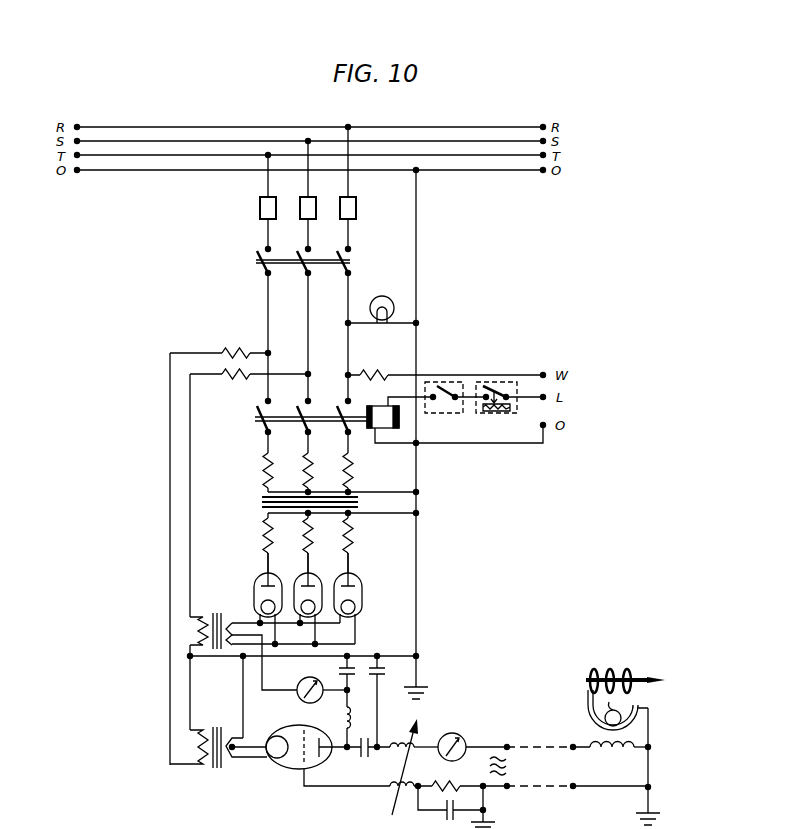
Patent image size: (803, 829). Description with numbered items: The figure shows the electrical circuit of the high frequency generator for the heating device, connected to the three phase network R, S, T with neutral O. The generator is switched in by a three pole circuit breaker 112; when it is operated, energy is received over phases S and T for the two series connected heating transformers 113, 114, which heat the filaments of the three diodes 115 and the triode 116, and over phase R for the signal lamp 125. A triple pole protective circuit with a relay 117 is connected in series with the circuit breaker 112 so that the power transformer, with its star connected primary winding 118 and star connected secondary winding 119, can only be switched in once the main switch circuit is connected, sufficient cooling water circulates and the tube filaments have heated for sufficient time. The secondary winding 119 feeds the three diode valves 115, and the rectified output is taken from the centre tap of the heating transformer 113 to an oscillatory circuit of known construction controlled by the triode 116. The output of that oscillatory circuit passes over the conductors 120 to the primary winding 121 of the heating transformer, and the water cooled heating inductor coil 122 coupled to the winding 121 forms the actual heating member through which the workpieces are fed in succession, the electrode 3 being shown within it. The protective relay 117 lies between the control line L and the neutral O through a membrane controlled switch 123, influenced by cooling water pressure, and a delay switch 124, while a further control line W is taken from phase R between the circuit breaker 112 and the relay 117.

The electrode 3 is at (644, 678).
The three pole circuit breaker 112 is at (353, 268).
The heating transformer 113 is at (205, 620).
The heating transformer 114 is at (201, 768).
The diodes 115 is at (256, 580).
The triode 116 is at (286, 760).
The relay 117 is at (373, 430).
The primary winding 118 is at (264, 462).
The secondary winding 119 is at (356, 549).
The conductors 120 is at (547, 753).
The primary winding 121 is at (610, 753).
The heating inductor coil 122 is at (640, 707).
The membrane controlled switch 123 is at (497, 383).
The delay switch 124 is at (447, 383).
The signal lamp 125 is at (397, 306).